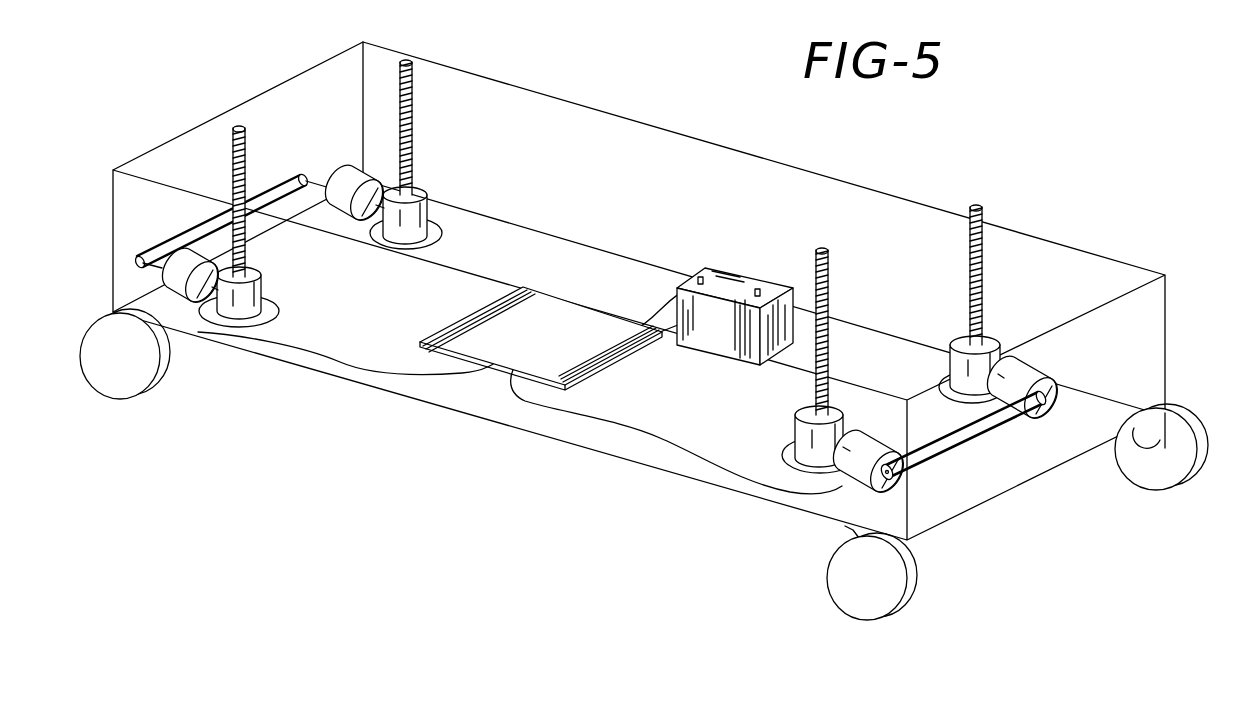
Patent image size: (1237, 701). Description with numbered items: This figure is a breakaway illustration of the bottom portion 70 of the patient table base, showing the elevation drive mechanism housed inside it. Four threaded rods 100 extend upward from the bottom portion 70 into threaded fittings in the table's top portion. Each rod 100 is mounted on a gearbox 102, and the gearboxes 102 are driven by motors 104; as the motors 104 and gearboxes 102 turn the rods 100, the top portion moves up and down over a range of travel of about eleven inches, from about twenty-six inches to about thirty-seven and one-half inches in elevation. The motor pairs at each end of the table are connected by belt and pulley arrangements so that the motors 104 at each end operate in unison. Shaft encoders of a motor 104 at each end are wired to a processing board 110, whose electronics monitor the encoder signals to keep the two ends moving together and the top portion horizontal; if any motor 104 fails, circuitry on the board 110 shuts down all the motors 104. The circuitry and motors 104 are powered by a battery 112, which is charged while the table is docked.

The bottom portion 70 is at (1165, 323).
The threaded rods 100 is at (233, 145).
The gearboxes 102 is at (430, 200).
The motors 104 is at (344, 168).
The processing board 110 is at (457, 338).
The battery 112 is at (731, 282).